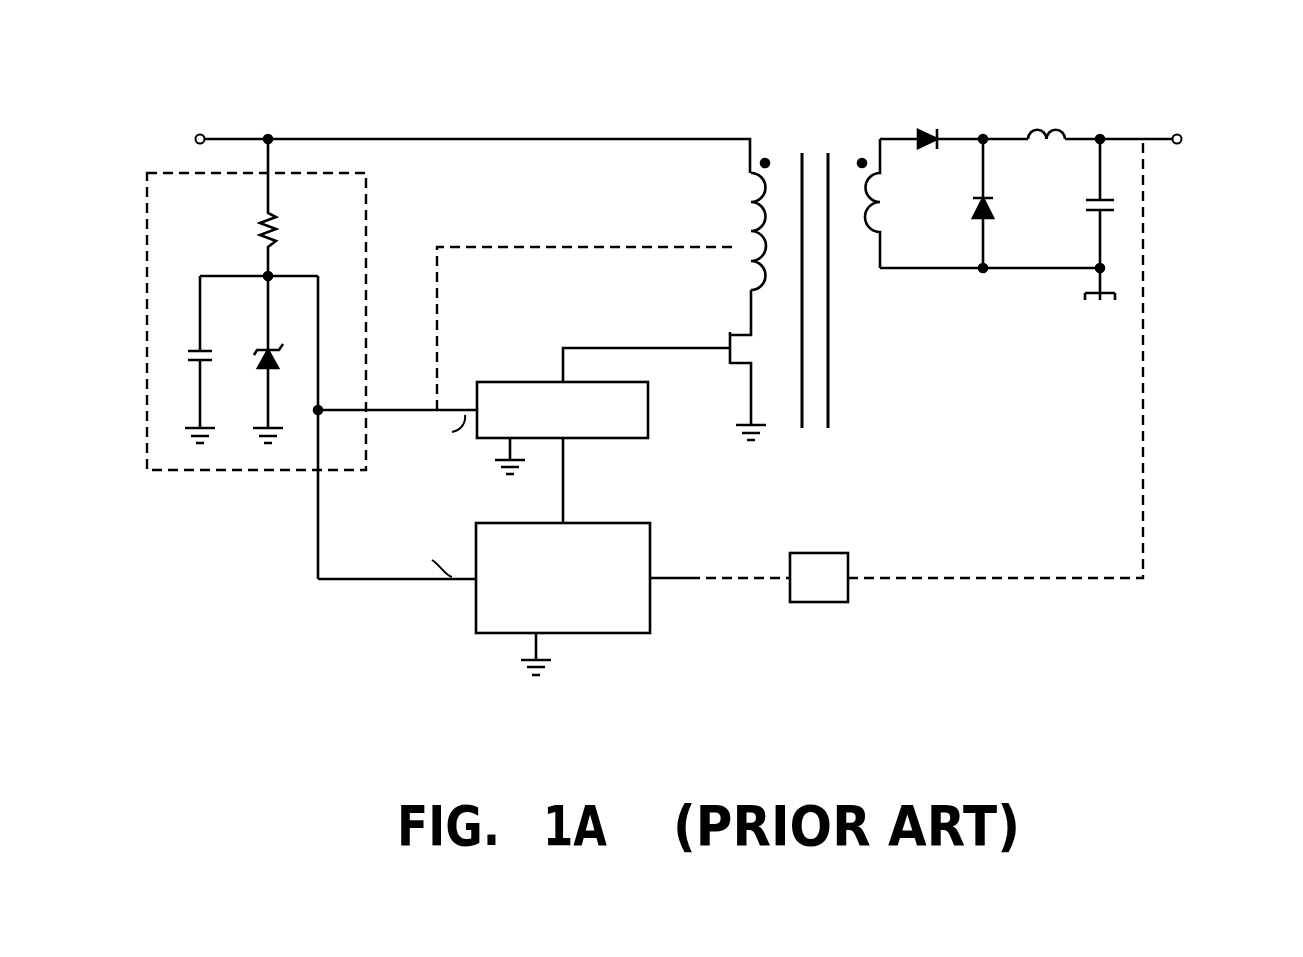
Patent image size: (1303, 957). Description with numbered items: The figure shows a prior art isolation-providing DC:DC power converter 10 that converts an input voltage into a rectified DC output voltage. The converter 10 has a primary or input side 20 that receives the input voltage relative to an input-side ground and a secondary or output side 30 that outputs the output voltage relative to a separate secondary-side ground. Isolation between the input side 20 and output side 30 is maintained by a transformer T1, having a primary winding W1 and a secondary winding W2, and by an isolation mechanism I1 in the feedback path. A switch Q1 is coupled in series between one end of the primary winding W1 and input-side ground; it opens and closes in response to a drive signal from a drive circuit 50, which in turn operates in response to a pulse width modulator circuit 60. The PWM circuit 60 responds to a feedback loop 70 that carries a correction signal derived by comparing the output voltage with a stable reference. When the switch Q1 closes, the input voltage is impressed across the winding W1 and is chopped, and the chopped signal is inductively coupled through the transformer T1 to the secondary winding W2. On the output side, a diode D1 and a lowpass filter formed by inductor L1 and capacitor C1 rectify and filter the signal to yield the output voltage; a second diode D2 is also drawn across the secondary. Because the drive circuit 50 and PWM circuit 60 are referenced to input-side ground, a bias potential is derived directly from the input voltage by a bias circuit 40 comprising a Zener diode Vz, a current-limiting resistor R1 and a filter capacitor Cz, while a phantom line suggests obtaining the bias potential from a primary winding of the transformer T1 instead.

The DC:DC power converter 10 is at (1072, 640).
The primary or input side 20 is at (805, 103).
The secondary or output side 30 is at (820, 103).
The bias circuit 40 is at (167, 470).
The drive circuit 50 is at (613, 438).
The pulse width modulator (PWM) circuit 60 is at (588, 643).
The feedback loop 70 is at (1040, 571).
The transformer T1 is at (822, 443).
The primary winding W1 is at (730, 224).
The secondary winding W2 is at (881, 233).
The switch Q1 is at (731, 365).
The current-limiting resistor R1 is at (293, 207).
The filter capacitor Cz is at (188, 359).
The Zener diode Vz is at (249, 359).
The diode D1 is at (938, 162).
The freewheeling diode D2 is at (1006, 203).
The lowpass filter inductor L1 is at (1059, 109).
The lowpass filter capacitor C1 is at (1082, 203).
The isolation mechanism I1 is at (819, 577).